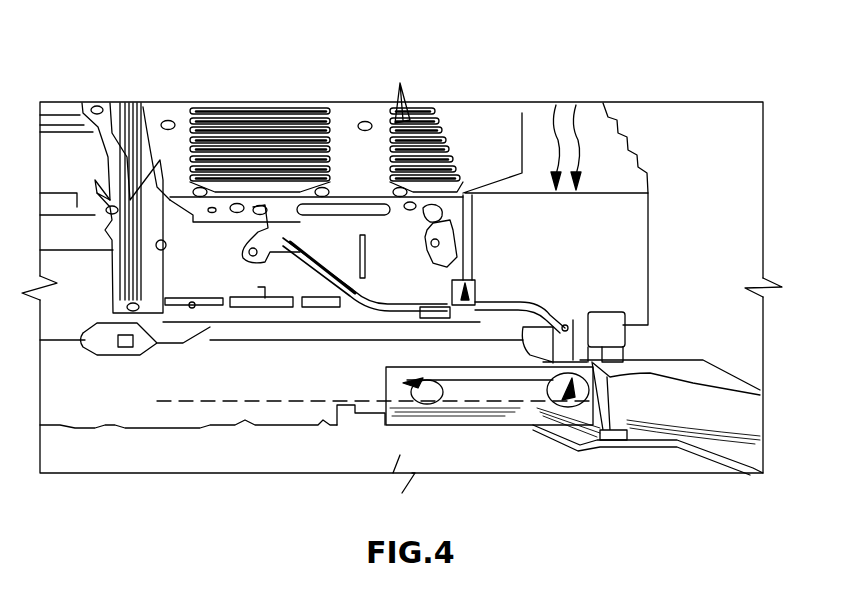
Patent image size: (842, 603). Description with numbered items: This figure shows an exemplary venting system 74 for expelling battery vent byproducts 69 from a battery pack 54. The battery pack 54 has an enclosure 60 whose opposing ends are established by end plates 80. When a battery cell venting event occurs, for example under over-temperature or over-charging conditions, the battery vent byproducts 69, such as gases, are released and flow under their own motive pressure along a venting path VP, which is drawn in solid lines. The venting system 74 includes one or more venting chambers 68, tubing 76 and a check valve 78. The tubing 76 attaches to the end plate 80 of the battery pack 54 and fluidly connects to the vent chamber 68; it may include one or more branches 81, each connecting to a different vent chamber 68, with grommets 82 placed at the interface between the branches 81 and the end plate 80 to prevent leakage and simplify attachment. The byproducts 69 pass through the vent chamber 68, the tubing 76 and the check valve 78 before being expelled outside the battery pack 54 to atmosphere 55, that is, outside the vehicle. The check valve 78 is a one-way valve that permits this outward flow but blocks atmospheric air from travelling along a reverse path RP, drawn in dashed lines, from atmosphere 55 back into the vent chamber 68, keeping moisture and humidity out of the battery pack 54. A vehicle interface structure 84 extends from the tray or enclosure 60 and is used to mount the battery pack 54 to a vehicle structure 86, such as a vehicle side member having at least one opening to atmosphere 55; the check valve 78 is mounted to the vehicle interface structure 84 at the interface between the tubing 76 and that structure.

The battery pack 54 is at (230, 84).
The atmosphere 55 is at (187, 468).
The enclosure 60 is at (140, 160).
The venting chamber 68 is at (508, 131).
The battery vent byproducts 69 is at (560, 140).
The venting system 74 is at (550, 90).
The tubing 76 is at (510, 305).
The check valve 78 is at (568, 351).
The end plate 80 is at (180, 270).
The branch 81 is at (365, 240).
The grommet 82 is at (247, 230).
The vehicle interface structure 84 is at (598, 440).
The vehicle structure 86 is at (357, 412).
The reverse path RP is at (262, 401).
The venting path VP is at (487, 187).